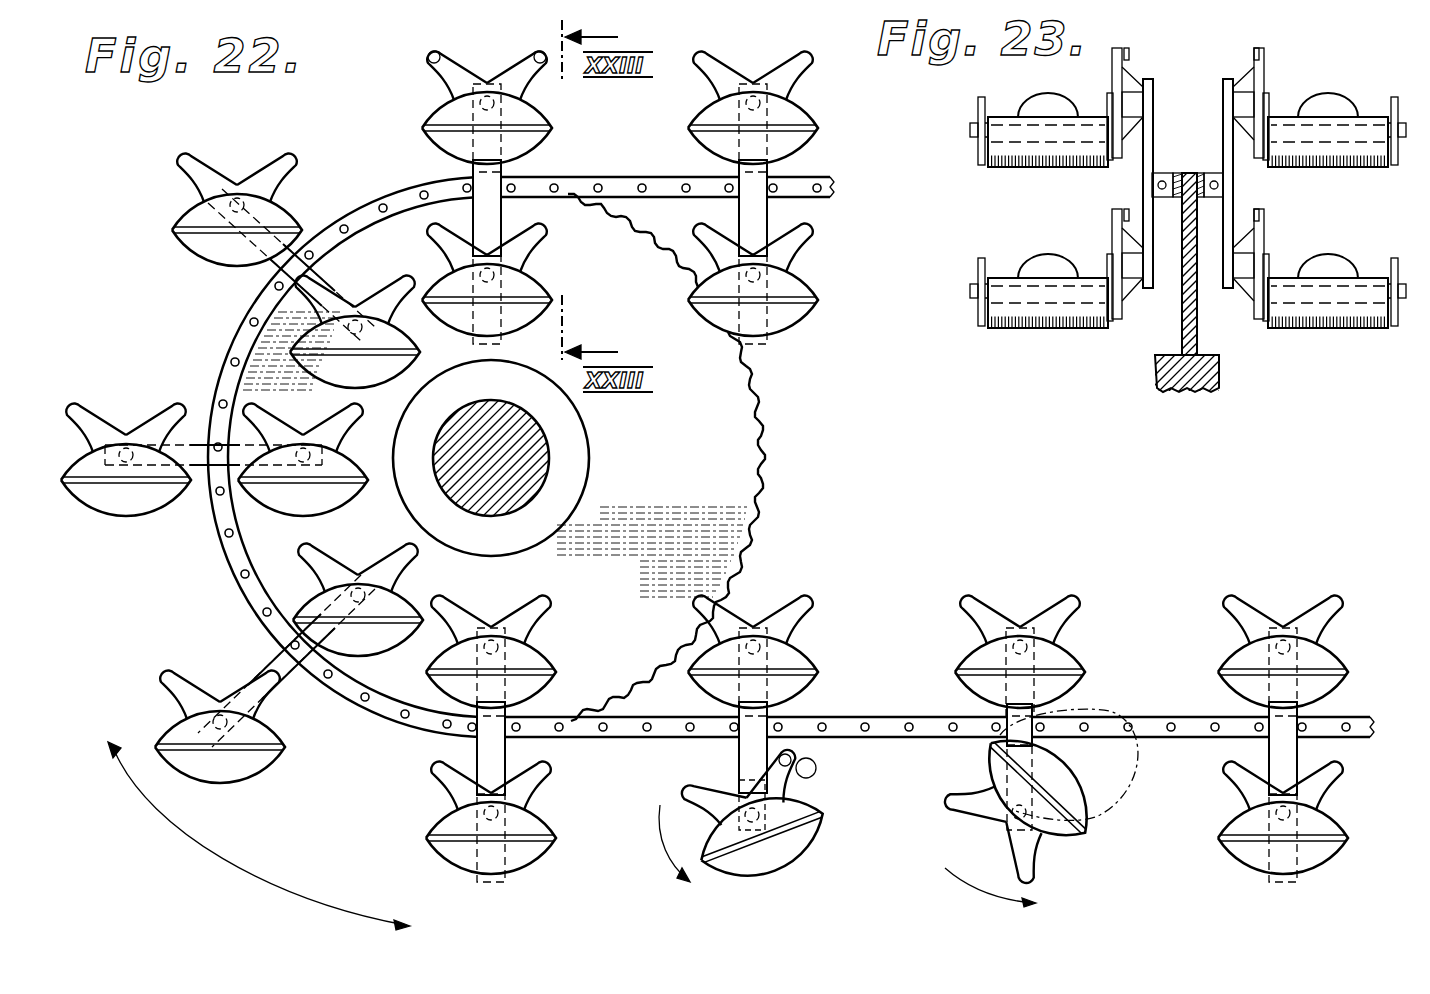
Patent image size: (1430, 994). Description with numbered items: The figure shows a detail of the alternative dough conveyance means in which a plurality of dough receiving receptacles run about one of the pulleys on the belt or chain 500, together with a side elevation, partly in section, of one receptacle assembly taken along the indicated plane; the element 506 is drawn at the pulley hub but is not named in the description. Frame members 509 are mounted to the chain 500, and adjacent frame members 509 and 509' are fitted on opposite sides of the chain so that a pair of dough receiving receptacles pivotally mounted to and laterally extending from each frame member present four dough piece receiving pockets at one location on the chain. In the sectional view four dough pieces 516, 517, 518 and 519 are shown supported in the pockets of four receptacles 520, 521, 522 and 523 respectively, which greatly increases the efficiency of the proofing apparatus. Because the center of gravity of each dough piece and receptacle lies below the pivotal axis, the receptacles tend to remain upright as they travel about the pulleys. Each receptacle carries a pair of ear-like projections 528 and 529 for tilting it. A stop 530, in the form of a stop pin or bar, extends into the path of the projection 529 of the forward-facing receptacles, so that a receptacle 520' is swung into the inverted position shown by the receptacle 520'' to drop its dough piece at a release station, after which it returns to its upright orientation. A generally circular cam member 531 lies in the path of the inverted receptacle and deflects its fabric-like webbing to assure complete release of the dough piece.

In FIG. 22, the chain 500 is at (240, 345).
In FIG. 23, the chain 500 is at (1188, 172).
In FIG. 22, the sprocket gear 506 is at (760, 452).
In FIG. 23, the sprocket gear 506 is at (1175, 362).
In FIG. 22, the frame member 509 is at (701, 495).
In FIG. 23, the frame member 509 is at (1122, 233).
In FIG. 23, the frame member 509' is at (1256, 238).
In FIG. 23, the dough piece 516 is at (1040, 98).
In FIG. 23, the dough piece 517 is at (1042, 263).
In FIG. 23, the dough piece 518 is at (1330, 97).
In FIG. 23, the dough piece 519 is at (1330, 262).
In FIG. 22, the dough receiving receptacle 520 is at (439, 434).
In FIG. 23, the dough receiving receptacle 520 is at (1044, 124).
In FIG. 22, the receptacle 520' is at (761, 845).
In FIG. 22, the receptacle 520'' is at (1051, 809).
In FIG. 22, the receptacle 521 is at (520, 315).
In FIG. 23, the receptacle 521 is at (1006, 330).
In FIG. 23, the receptacle 522 is at (1376, 167).
In FIG. 23, the receptacle 523 is at (1316, 330).
In FIG. 22, the ear-like projection 528 is at (437, 55).
In FIG. 22, the ear-like projection 529 is at (540, 52).
In FIG. 23, the ear-like projection 529 is at (1128, 56).
In FIG. 22, the stop 530 is at (818, 765).
In FIG. 22, the cam member 531 is at (1141, 766).